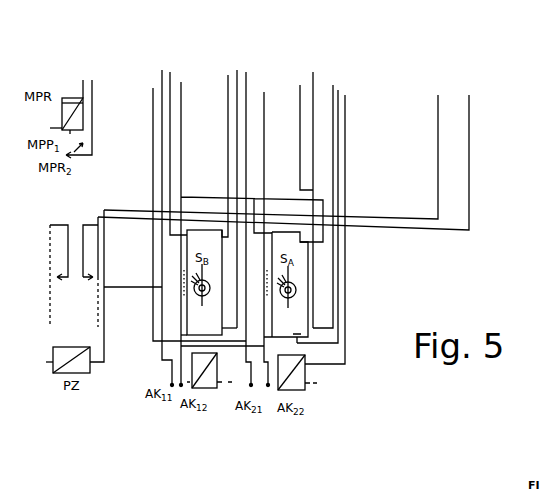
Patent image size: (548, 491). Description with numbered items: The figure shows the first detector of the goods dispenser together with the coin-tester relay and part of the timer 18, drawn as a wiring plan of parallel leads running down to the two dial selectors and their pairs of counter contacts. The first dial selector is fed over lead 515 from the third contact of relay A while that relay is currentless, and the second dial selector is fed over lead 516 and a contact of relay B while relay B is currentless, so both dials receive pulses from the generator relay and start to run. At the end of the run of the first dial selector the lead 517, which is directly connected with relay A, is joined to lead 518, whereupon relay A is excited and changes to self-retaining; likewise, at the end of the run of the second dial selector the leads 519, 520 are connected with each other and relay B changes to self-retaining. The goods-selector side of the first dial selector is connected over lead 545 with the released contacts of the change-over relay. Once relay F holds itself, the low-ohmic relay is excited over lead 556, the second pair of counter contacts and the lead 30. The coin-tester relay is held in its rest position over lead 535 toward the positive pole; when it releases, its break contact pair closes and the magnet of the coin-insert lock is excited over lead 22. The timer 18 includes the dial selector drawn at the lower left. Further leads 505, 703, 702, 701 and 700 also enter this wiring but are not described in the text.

The lead 535 is at (83, 80).
The lead 22 is at (92, 80).
The lead 556 is at (153, 88).
The control line 505 is at (162, 70).
The control line 703 is at (170, 72).
The lead 545 is at (181, 82).
The lead 519 is at (228, 75).
The lead 520 is at (237, 70).
The lead 517 is at (246, 72).
The lead 30 is at (264, 92).
The lead 518 is at (300, 85).
The lead 516 is at (313, 72).
The control line 702 is at (333, 85).
The control line 701 is at (338, 90).
The lead 515 is at (345, 95).
The timer 18 is at (276, 148).
The supply line 700 is at (293, 153).